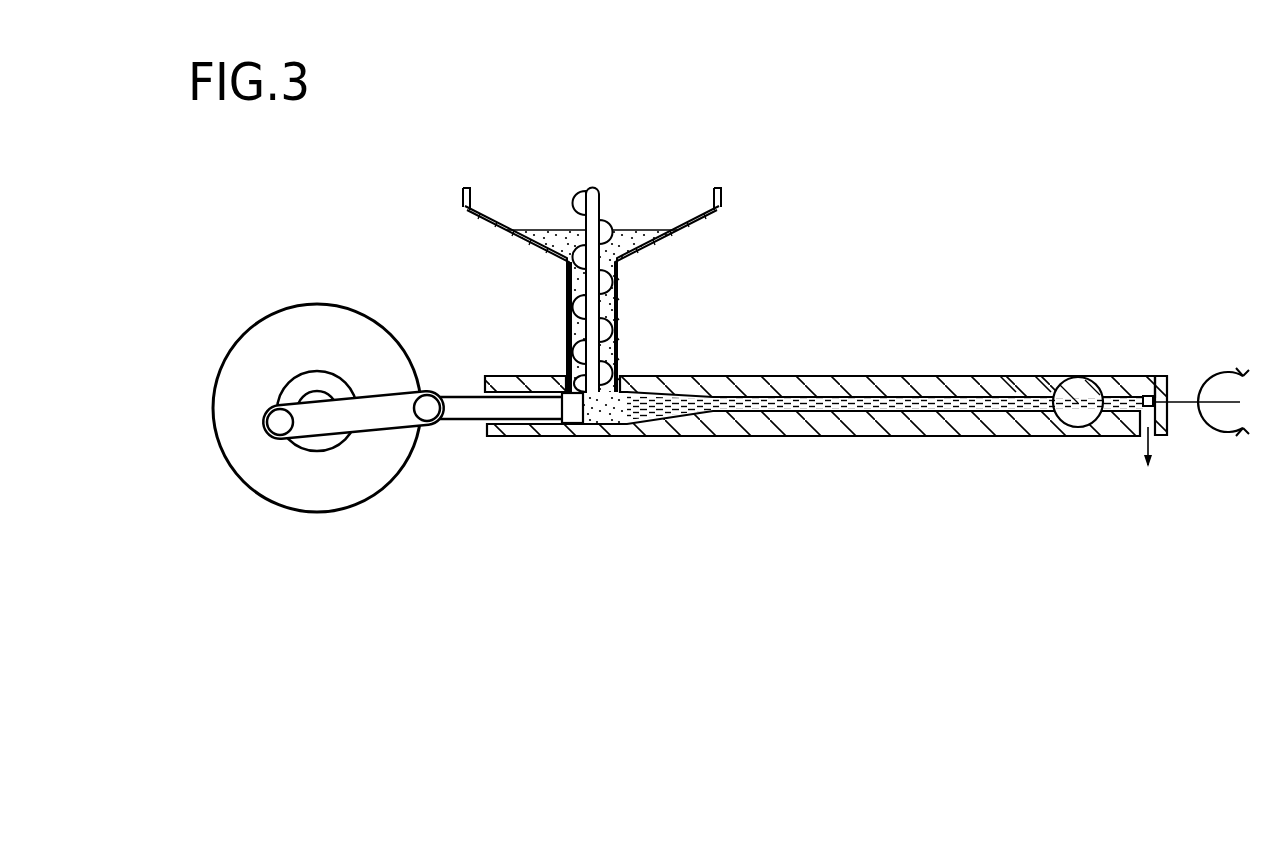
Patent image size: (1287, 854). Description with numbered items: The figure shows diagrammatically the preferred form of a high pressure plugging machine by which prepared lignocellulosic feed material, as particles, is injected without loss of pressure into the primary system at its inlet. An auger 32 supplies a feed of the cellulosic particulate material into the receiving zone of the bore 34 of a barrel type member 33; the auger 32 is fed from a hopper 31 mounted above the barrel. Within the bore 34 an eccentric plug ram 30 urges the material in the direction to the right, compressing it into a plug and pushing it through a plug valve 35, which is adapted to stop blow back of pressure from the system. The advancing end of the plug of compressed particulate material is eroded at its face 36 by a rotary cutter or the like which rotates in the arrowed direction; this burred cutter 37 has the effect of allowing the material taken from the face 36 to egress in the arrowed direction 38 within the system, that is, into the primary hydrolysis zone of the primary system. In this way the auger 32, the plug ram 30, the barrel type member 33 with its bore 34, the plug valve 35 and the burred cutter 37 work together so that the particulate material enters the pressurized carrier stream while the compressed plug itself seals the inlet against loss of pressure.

The eccentric plug ram 30 is at (568, 390).
The hopper 31 is at (664, 236).
The auger 32 is at (602, 327).
The barrel type member 33 is at (880, 382).
The bore 34 is at (1015, 388).
The plug valve 35 is at (1083, 382).
The face 36 is at (1137, 393).
The burred cutter 37 is at (1183, 403).
The arrowed direction 38 is at (1140, 442).